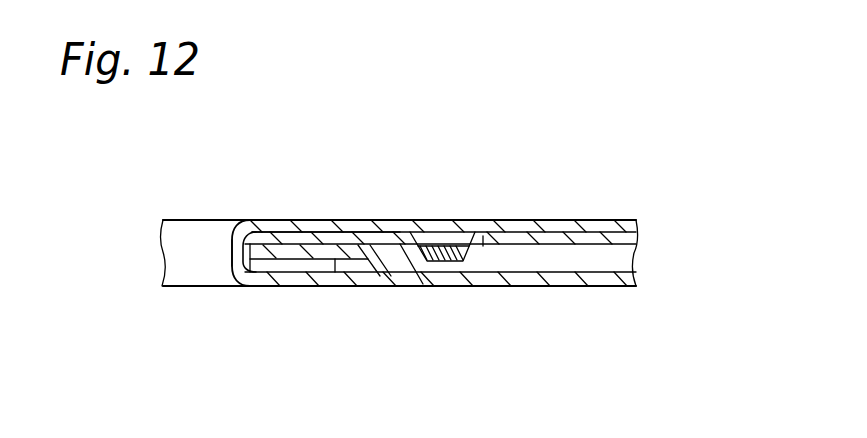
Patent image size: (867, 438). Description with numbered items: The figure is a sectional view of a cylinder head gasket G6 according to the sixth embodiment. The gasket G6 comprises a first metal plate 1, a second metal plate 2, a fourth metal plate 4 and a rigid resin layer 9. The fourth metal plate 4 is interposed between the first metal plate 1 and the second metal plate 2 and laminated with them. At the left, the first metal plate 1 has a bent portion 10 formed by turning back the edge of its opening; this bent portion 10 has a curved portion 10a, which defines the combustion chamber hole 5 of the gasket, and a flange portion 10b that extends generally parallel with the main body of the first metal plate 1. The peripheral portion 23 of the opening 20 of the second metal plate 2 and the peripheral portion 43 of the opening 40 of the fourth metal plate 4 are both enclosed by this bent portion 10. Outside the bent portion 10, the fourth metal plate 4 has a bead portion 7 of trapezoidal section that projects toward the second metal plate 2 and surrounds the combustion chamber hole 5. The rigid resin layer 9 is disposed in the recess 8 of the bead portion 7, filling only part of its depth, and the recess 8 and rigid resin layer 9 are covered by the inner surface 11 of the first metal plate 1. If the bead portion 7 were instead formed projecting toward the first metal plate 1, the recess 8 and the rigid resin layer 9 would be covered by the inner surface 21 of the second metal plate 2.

The cylinder head gasket G6 is at (563, 216).
The first metal plate 1 is at (608, 228).
The second metal plate 2 is at (603, 278).
The fourth metal plate 4 is at (642, 238).
The combustion chamber hole 5 is at (190, 237).
The bead portion 7 is at (452, 268).
The recess 8 is at (463, 232).
The rigid resin layer 9 is at (447, 243).
The bent portion 10 is at (299, 278).
The curved portion 10a is at (232, 252).
The flange portion 10b is at (330, 278).
The inner surface of the first metal plate 11 is at (420, 245).
The opening of the second metal plate 20 is at (246, 262).
The inner surface of the second metal plate 21 is at (538, 269).
The peripheral portion of the opening of the second metal plate 23 is at (290, 254).
The opening of the fourth metal plate 40 is at (248, 232).
The peripheral portion of the opening of the fourth metal plate 43 is at (320, 232).